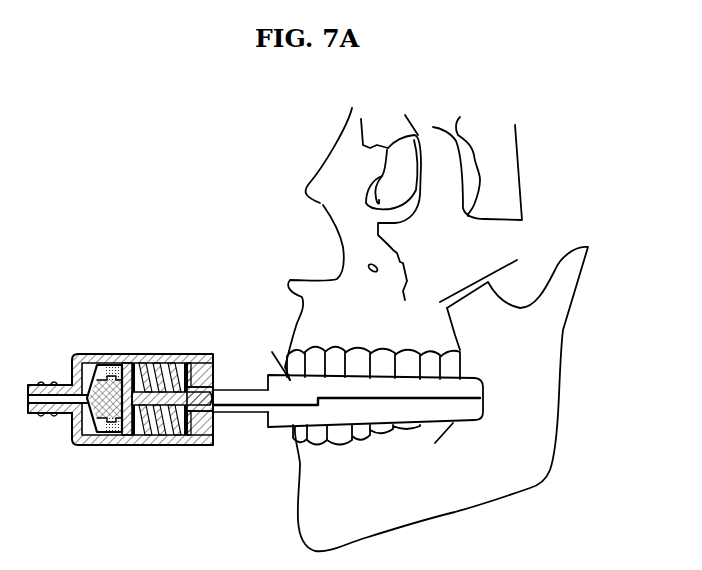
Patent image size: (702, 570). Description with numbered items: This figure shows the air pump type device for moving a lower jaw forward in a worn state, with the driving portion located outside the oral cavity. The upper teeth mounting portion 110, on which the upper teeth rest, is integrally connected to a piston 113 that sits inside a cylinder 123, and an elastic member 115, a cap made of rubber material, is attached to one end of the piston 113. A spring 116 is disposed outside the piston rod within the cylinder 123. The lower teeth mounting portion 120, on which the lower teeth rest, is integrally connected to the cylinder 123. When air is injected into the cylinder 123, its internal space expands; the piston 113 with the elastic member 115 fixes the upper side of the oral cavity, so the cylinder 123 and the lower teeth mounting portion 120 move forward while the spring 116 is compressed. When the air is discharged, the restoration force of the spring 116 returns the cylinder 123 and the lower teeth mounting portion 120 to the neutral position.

The upper teeth mounting portion 110 is at (290, 380).
The lower teeth mounting portion 120 is at (278, 418).
The cylinder 123 is at (93, 440).
The elastic member 115 is at (102, 367).
The piston 113 is at (126, 368).
The spring 116 is at (163, 430).